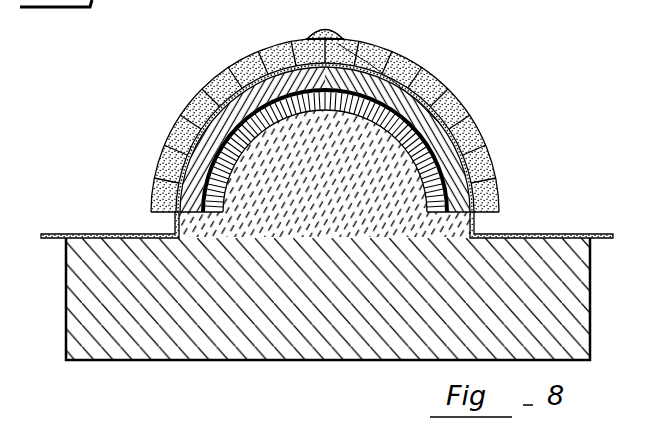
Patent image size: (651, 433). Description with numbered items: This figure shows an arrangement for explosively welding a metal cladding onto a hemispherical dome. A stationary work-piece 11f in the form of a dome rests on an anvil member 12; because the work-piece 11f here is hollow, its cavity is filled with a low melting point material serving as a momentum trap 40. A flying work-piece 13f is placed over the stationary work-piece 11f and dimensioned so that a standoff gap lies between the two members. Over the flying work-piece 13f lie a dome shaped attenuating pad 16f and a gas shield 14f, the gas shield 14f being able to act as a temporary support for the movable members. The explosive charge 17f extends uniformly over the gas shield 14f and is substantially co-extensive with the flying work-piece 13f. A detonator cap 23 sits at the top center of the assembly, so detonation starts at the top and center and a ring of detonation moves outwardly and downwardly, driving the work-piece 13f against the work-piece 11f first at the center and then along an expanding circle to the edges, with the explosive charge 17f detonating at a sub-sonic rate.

The anvil member 12 is at (590, 297).
The gas shield 14f is at (80, 235).
The momentum trap 40 is at (332, 197).
The stationary work-piece 11f is at (414, 152).
The flying work-piece 13f is at (460, 167).
The attenuating pad 16f is at (443, 127).
The explosive charge 17f is at (204, 91).
The detonator cap 23 is at (331, 34).